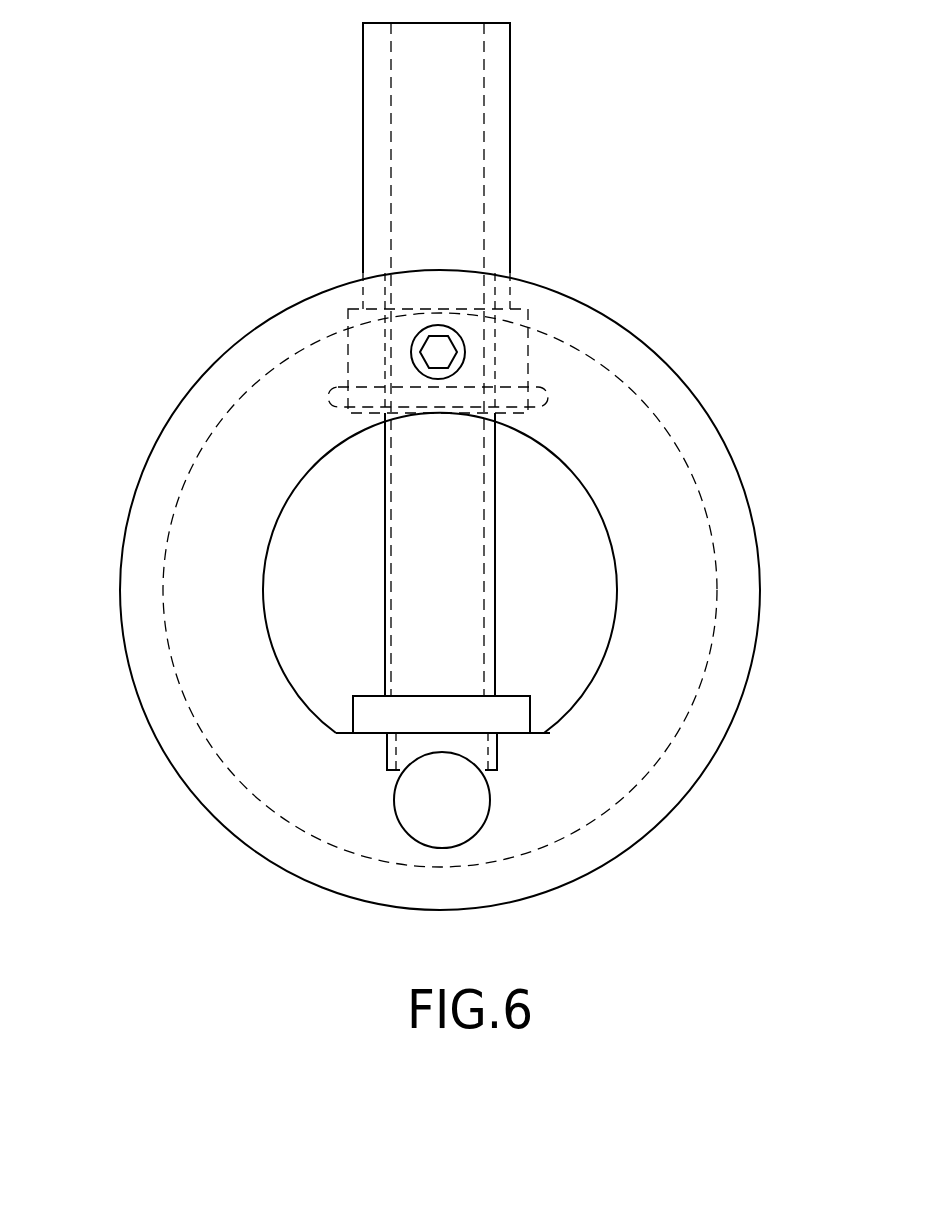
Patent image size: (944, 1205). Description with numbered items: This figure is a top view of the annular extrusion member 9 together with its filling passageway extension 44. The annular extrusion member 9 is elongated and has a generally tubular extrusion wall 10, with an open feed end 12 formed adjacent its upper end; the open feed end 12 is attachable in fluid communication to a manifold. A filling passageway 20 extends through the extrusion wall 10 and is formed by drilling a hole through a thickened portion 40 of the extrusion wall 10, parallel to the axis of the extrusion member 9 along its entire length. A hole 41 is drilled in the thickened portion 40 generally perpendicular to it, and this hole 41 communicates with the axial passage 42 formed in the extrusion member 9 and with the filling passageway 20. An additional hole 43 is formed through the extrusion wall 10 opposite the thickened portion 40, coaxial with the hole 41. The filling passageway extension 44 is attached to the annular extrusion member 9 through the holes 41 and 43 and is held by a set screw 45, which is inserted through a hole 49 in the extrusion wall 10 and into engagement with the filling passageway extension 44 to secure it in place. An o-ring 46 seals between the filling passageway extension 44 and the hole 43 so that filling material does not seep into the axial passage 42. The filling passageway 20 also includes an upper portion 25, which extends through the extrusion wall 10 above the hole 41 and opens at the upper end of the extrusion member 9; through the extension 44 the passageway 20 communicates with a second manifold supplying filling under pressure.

The annular extrusion member 9 is at (752, 512).
The extrusion wall 10 is at (692, 640).
The open feed end 12 is at (346, 593).
The filling passageway 20 is at (438, 810).
The upper portion 25 is at (447, 830).
The thickened portion 40 is at (528, 750).
The hole 41 is at (387, 750).
The axial passage 42 is at (560, 506).
The hole 43 is at (348, 360).
The filling passageway extension 44 is at (512, 158).
The set screw 45 is at (438, 326).
The o-ring 46 is at (328, 395).
The hole 49 is at (438, 374).